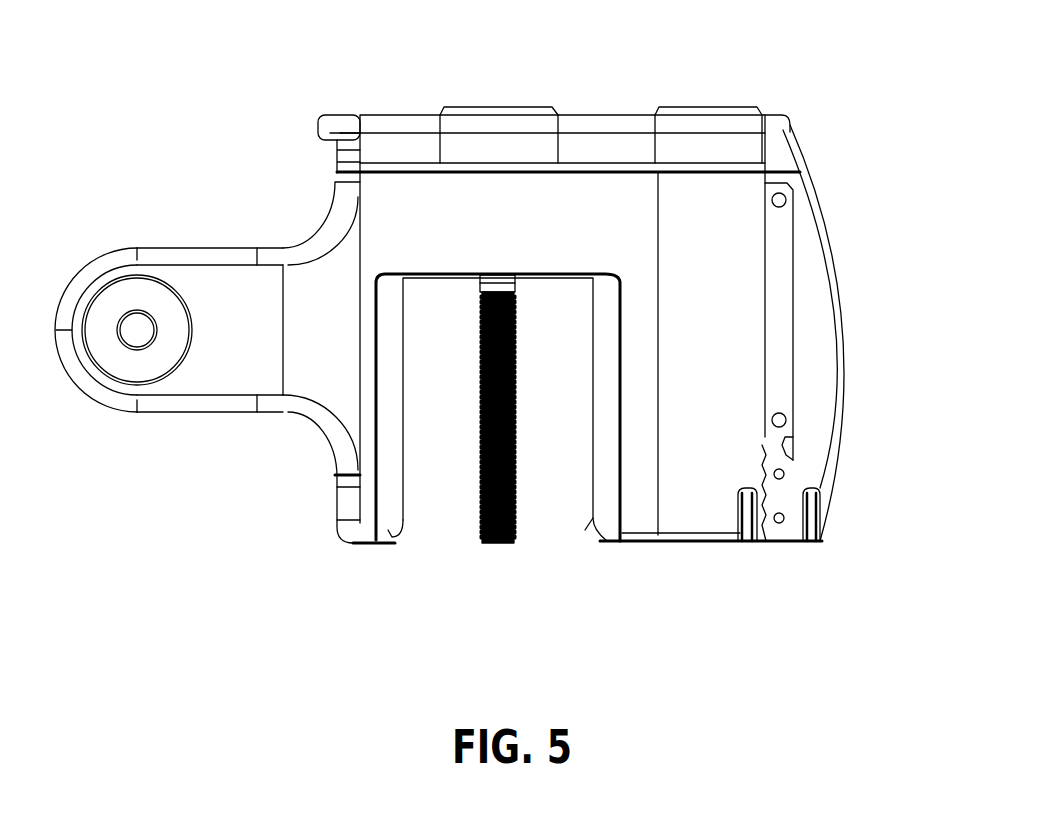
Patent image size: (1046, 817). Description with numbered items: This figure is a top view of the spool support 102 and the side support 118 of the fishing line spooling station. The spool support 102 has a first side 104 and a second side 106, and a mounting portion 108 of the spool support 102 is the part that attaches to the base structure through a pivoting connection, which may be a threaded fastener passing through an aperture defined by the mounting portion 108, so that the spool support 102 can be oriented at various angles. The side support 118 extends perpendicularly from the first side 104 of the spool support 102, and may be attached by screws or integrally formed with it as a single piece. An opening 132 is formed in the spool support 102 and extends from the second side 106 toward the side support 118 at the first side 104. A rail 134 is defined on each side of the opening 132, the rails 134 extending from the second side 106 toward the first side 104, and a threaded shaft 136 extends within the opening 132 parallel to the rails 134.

The spool support 102 is at (637, 515).
The first side 104 is at (780, 170).
The second side 106 is at (712, 545).
The mounting portion 108 is at (182, 252).
The side support 118 is at (616, 118).
The opening 132 is at (443, 521).
The rail 134 is at (397, 513).
The threaded shaft 136 is at (498, 548).